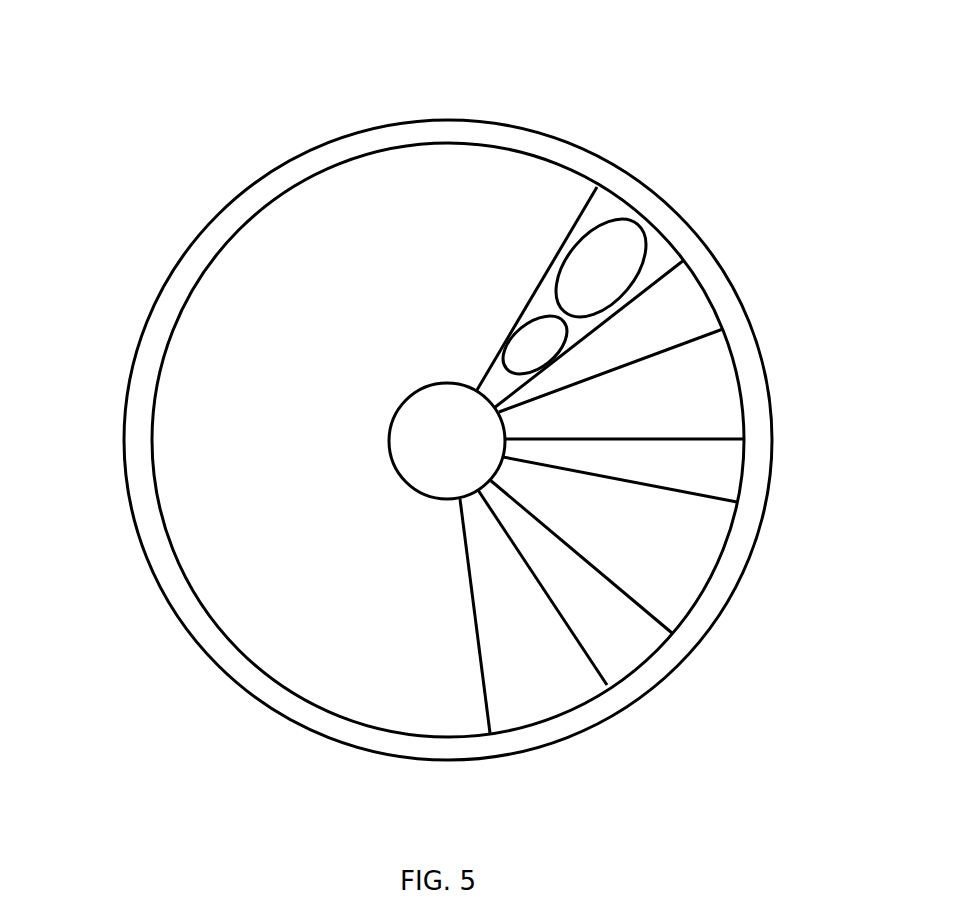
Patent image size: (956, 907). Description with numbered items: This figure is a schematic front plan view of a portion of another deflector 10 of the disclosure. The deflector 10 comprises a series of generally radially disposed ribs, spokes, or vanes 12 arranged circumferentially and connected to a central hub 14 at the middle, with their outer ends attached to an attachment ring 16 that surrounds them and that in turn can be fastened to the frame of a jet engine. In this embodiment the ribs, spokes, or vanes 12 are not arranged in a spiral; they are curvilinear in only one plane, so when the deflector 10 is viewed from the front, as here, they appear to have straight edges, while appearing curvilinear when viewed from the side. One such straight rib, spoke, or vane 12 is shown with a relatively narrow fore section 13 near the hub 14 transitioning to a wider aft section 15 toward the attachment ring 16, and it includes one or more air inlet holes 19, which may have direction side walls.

The deflector 10 is at (266, 126).
The ribs, spokes, or vanes 12 is at (590, 334).
The fore section 13 is at (497, 390).
The central hub 14 is at (470, 460).
The aft section 15 is at (663, 258).
The attachment ring 16 is at (392, 122).
The air inlet holes 19 is at (612, 260).